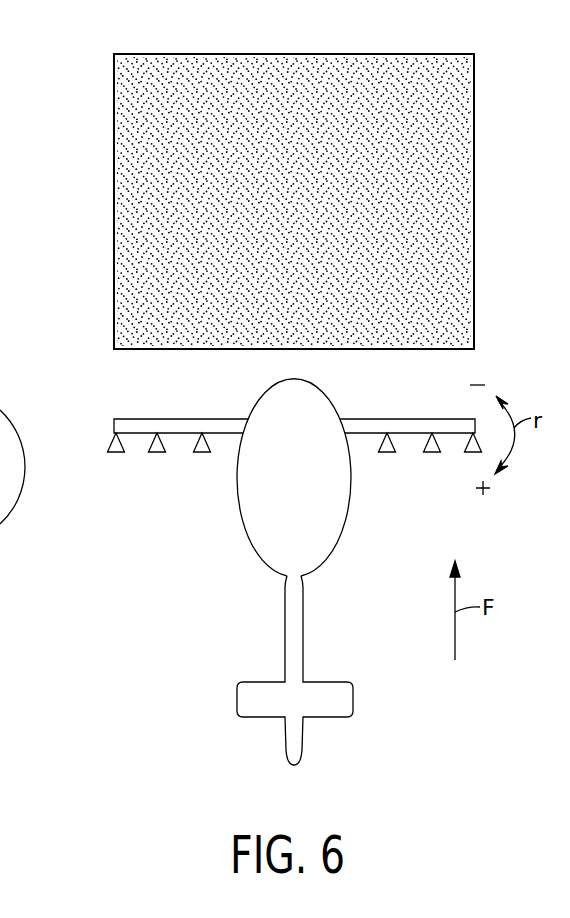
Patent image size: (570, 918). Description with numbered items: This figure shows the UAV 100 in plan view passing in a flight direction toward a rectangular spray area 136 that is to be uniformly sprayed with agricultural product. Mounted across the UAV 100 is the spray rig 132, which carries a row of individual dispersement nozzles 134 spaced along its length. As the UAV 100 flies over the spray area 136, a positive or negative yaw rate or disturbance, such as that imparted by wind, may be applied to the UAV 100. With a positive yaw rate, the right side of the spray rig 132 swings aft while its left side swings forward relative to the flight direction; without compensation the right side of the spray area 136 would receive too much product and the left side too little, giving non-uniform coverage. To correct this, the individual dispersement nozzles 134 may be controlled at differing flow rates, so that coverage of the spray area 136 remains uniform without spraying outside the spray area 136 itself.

The UAV 100 is at (193, 592).
The spray rig 132 is at (370, 424).
The dispersement nozzles 134 is at (155, 451).
The spray area 136 is at (474, 100).